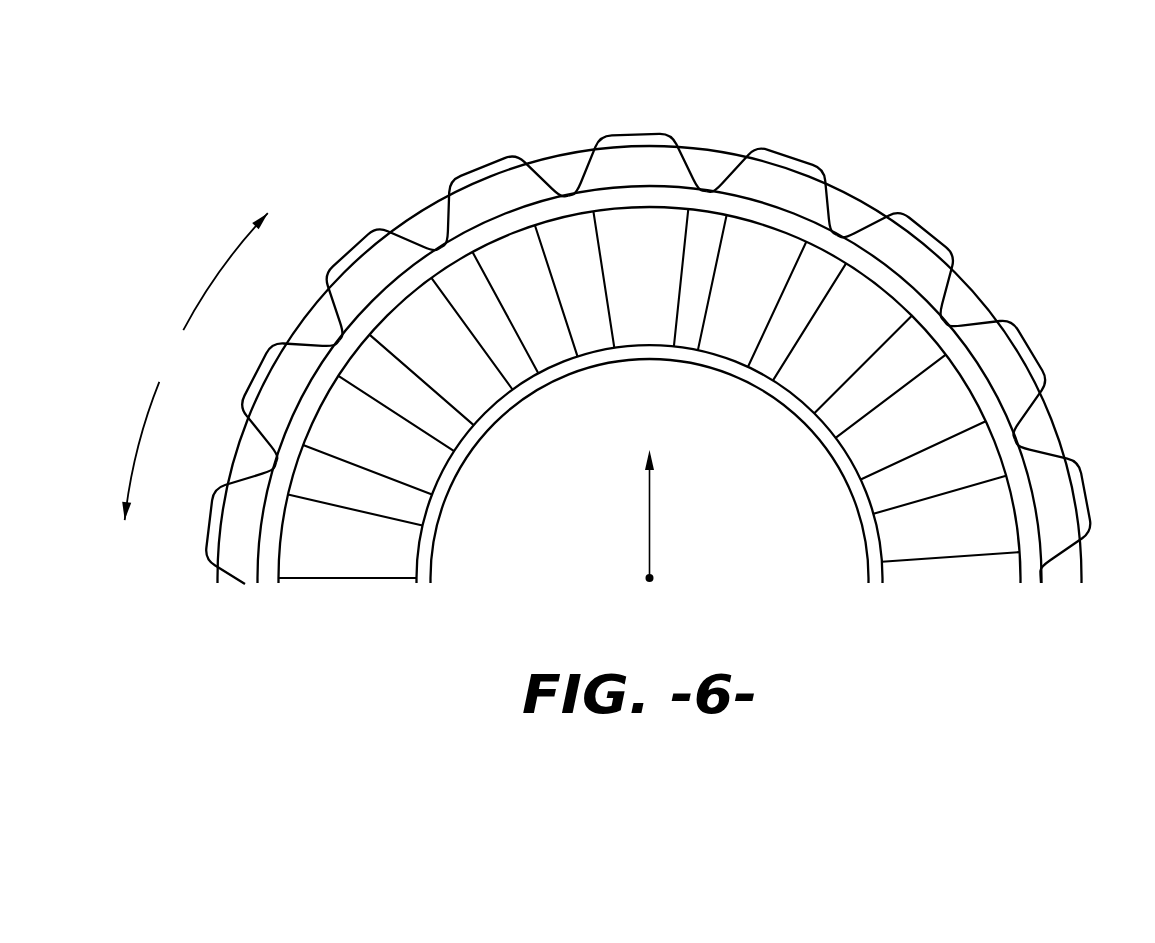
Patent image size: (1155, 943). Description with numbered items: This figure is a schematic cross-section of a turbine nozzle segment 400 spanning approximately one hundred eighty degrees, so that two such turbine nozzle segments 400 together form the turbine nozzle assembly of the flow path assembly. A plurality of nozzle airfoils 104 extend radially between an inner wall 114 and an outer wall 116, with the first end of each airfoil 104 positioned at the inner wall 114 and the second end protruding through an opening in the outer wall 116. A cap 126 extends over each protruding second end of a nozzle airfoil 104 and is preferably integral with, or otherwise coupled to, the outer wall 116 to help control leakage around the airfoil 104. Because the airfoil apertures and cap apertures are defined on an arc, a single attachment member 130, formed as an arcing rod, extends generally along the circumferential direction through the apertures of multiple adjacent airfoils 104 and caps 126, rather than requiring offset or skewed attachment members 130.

The turbine nozzle segment 400 is at (606, 316).
The attachment member 130 is at (707, 147).
The cap 126 is at (805, 152).
The outer wall 116 is at (940, 333).
The nozzle airfoil 104 is at (552, 348).
The inner wall 114 is at (843, 465).